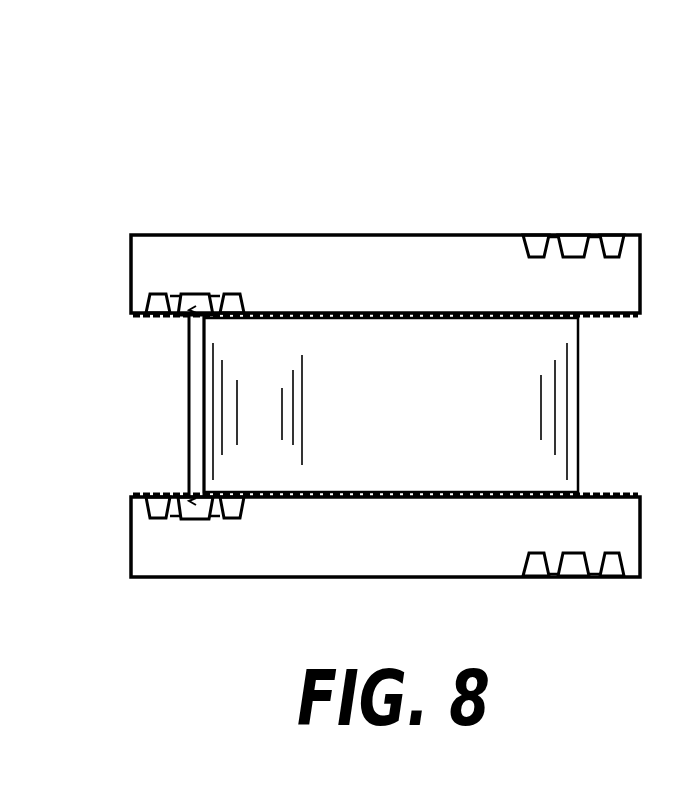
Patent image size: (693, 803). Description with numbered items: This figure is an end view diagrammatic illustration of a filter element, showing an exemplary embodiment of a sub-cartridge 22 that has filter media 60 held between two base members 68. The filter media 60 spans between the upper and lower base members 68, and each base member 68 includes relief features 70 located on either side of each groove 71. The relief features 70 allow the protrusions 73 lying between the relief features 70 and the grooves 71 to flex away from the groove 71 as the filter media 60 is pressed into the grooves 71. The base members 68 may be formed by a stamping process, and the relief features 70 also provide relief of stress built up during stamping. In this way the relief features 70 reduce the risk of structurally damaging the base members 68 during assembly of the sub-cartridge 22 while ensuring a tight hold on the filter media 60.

The sub-cartridge 22 is at (492, 150).
The filter media 60 is at (412, 427).
The base member 68 is at (413, 292).
The relief feature 70 is at (150, 292).
The groove 71 is at (200, 292).
The protrusion 73 is at (185, 296).